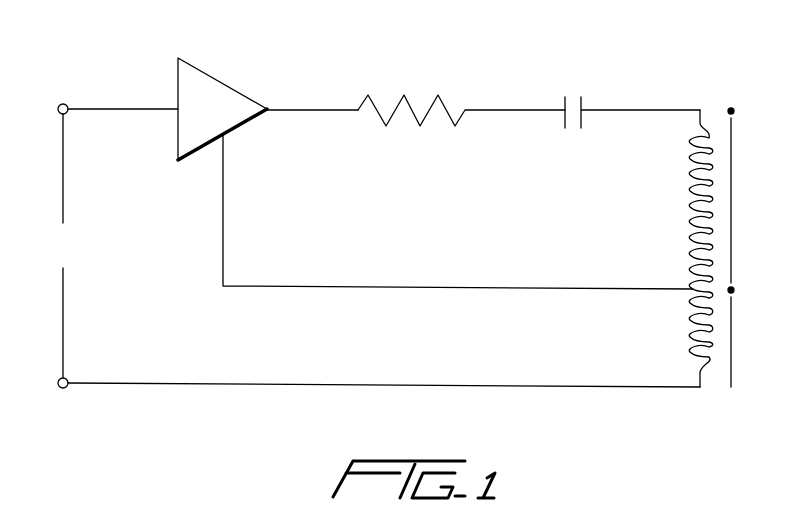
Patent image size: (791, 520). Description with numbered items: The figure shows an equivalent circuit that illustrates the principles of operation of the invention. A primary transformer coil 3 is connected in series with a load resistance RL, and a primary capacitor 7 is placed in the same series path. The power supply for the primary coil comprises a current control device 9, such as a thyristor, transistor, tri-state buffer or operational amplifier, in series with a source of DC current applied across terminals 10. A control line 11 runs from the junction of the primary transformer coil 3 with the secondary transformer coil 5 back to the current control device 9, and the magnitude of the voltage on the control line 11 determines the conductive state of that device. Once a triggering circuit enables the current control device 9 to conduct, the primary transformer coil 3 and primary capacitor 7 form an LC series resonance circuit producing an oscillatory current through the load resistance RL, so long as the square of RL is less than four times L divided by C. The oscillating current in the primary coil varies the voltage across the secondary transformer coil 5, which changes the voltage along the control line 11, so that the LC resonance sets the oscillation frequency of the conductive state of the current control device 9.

The primary transformer coil 3 is at (692, 214).
The secondary transformer coil 5 is at (692, 339).
The primary capacitor 7 is at (584, 100).
The current control device 9 is at (228, 86).
The terminals 10 is at (375, 246).
The control line 11 is at (224, 223).
The load resistance RL is at (461, 94).